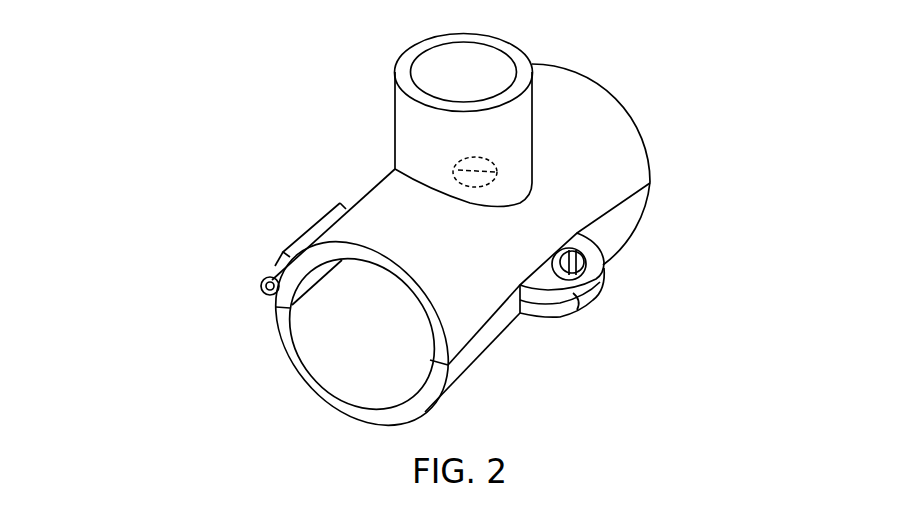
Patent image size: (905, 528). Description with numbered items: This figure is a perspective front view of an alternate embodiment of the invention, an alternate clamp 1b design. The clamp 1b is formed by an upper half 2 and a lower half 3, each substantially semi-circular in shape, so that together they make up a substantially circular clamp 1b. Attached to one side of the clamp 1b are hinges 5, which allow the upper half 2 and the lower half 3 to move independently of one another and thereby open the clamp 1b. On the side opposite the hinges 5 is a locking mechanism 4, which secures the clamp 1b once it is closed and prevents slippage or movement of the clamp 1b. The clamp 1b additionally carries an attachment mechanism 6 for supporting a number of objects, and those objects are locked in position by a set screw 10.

The clamp 1b is at (417, 220).
The upper half 2 is at (593, 133).
The lower half 3 is at (468, 358).
The locking mechanism 4 is at (590, 313).
The hinges 5 is at (263, 280).
The attachment mechanism 6 is at (425, 130).
The set screw 10 is at (502, 162).